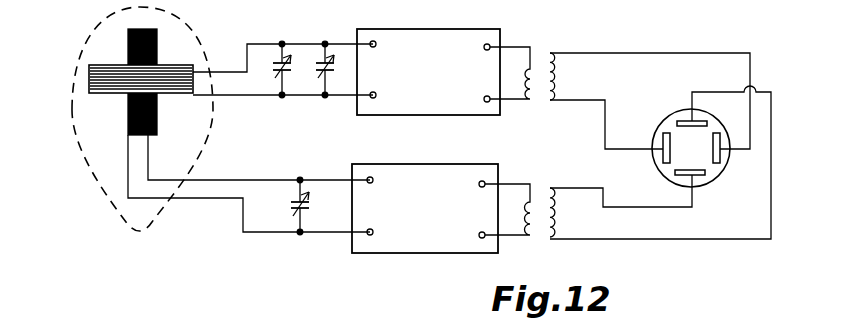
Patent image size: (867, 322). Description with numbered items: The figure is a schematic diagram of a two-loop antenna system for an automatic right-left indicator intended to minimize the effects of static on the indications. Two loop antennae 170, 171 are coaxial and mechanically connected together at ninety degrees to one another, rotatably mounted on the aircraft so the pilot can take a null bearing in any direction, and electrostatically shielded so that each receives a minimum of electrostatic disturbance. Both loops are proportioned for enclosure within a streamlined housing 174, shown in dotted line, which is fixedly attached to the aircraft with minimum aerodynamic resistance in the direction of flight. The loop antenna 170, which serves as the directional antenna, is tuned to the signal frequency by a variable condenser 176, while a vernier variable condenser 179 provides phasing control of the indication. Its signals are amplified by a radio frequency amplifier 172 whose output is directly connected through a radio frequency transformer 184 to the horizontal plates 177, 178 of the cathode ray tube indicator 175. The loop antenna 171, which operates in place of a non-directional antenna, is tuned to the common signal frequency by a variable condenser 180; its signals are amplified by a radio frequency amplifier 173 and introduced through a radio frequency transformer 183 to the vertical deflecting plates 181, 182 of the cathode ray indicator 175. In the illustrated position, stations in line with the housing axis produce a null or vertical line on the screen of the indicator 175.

The loop antenna 170 is at (190, 95).
The loop antenna 171 is at (157, 30).
The radio frequency amplifier 172 is at (397, 34).
The radio frequency amplifier 173 is at (390, 174).
The streamlined housing 174 is at (100, 26).
The cathode ray tube indicator 175 is at (676, 109).
The variable condenser 176 is at (273, 60).
The horizontal plate 177 is at (660, 158).
The horizontal plate 178 is at (722, 162).
The vernier variable condenser 179 is at (318, 60).
The variable condenser 180 is at (306, 212).
The vertical deflecting plate 181 is at (699, 123).
The vertical deflecting plate 182 is at (697, 176).
The radio frequency transformer 183 is at (536, 238).
The radio frequency transformer 184 is at (542, 53).